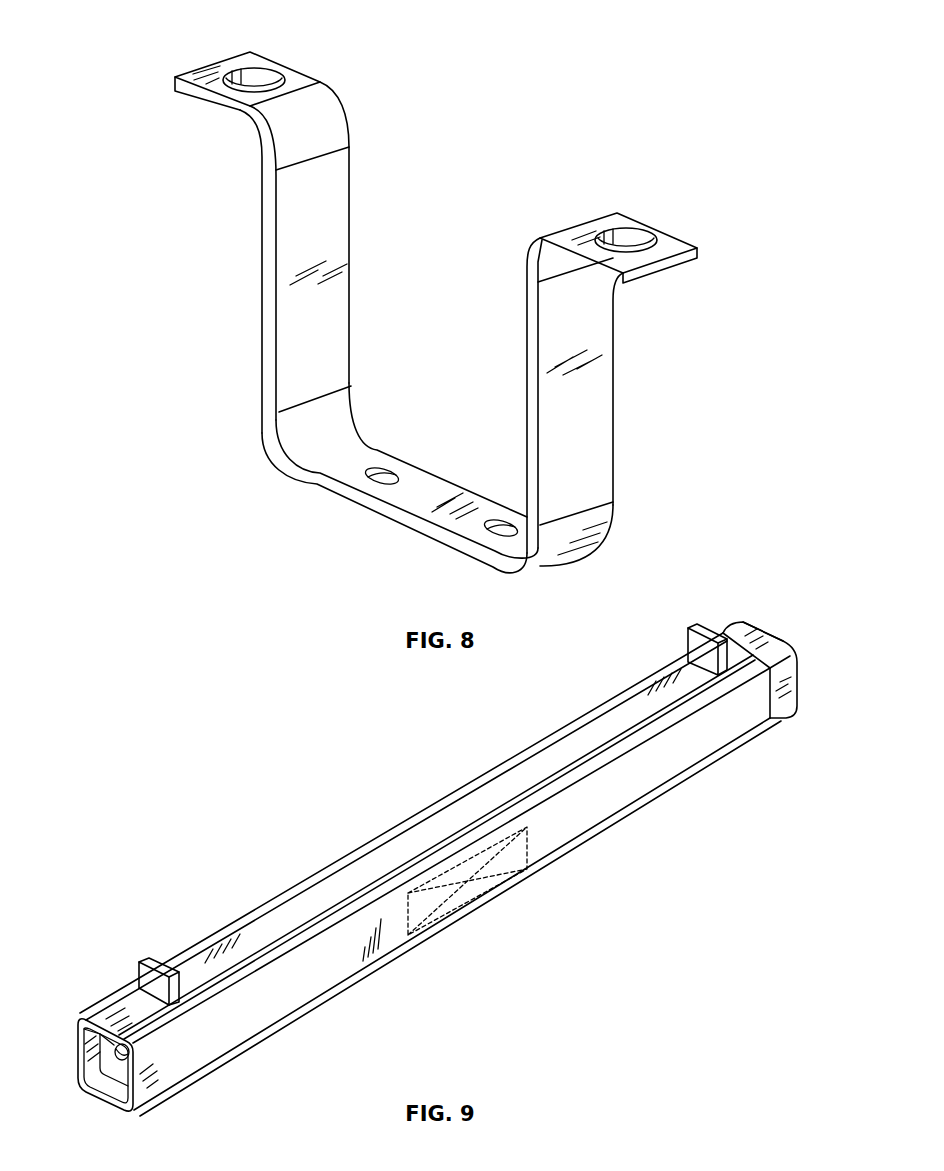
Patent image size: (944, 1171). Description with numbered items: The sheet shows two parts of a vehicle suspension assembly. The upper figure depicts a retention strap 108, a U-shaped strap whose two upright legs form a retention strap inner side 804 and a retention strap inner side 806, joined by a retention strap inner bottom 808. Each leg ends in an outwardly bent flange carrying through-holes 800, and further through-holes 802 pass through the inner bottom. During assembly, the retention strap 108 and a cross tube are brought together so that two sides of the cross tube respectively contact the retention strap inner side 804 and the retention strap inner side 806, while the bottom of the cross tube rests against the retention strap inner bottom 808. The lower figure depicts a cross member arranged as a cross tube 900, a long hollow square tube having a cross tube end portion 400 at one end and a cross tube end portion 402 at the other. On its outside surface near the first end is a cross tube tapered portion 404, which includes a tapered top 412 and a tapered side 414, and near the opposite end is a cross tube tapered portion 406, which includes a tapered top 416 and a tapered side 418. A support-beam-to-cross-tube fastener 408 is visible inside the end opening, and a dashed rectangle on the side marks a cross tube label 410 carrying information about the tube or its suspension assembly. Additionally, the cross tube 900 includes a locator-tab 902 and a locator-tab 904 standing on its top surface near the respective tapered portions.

In FIG. 8, the retention strap 108 is at (478, 115).
In FIG. 8, the through-holes 800 is at (268, 80).
In FIG. 8, the through-holes 802 is at (372, 480).
In FIG. 8, the retention strap inner side 804 is at (338, 301).
In FIG. 8, the retention strap inner side 806 is at (492, 267).
In FIG. 8, the retention strap inner bottom 808 is at (432, 486).
In FIG. 9, the cross tube 900 is at (414, 770).
In FIG. 9, the cross tube end portion 400 is at (100, 1098).
In FIG. 9, the cross tube end portion 402 is at (766, 624).
In FIG. 9, the cross tube tapered portion 404 is at (77, 1000).
In FIG. 9, the cross tube tapered portion 406 is at (728, 618).
In FIG. 9, the support-beam-to-cross-tube fastener 408 is at (113, 1048).
In FIG. 9, the cross tube label 410 is at (470, 896).
In FIG. 9, the tapered top 412 is at (110, 1015).
In FIG. 9, the tapered side 414 is at (145, 1092).
In FIG. 9, the tapered top 416 is at (749, 627).
In FIG. 9, the tapered side 418 is at (793, 712).
In FIG. 9, the locator-tab 902 is at (158, 960).
In FIG. 9, the locator-tab 904 is at (690, 642).